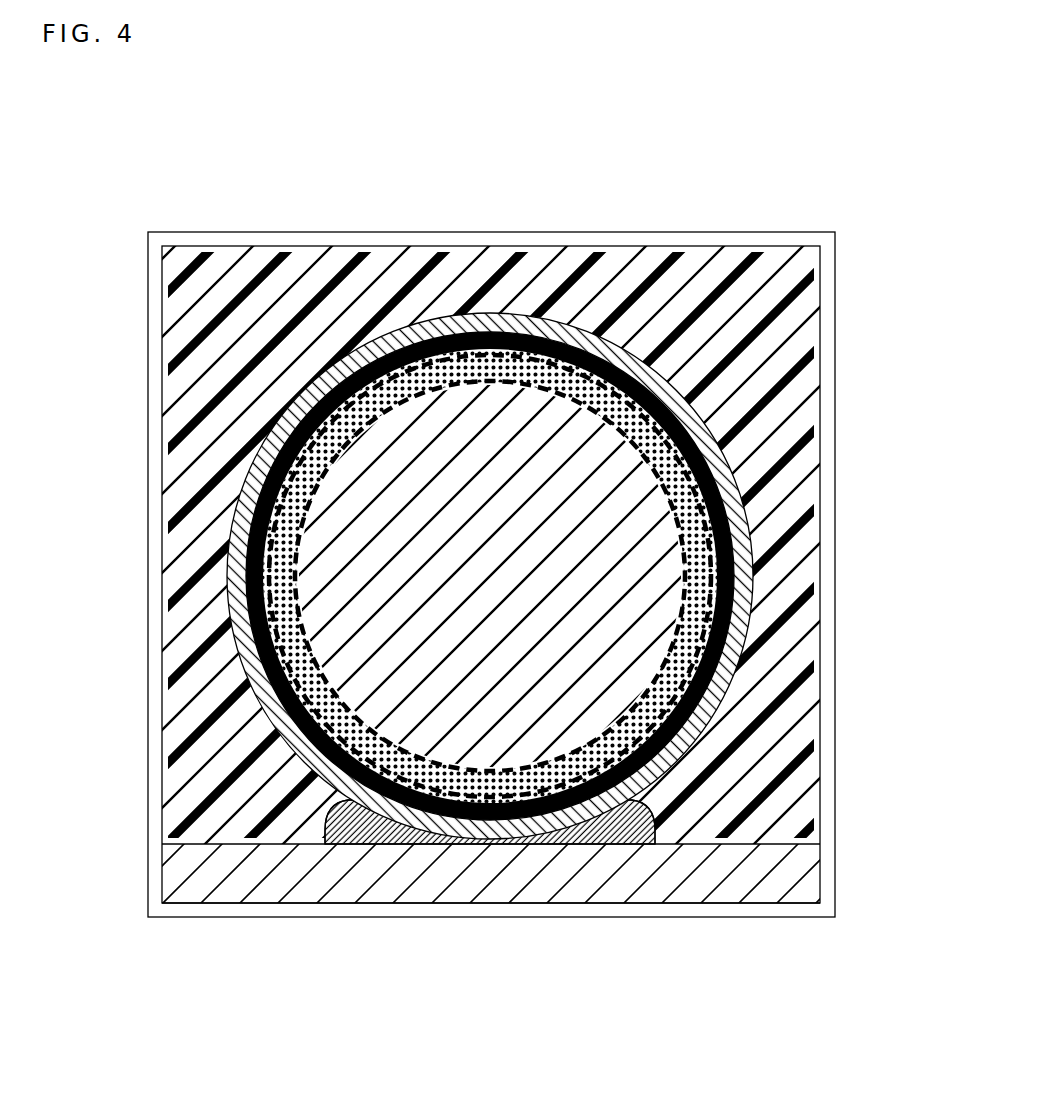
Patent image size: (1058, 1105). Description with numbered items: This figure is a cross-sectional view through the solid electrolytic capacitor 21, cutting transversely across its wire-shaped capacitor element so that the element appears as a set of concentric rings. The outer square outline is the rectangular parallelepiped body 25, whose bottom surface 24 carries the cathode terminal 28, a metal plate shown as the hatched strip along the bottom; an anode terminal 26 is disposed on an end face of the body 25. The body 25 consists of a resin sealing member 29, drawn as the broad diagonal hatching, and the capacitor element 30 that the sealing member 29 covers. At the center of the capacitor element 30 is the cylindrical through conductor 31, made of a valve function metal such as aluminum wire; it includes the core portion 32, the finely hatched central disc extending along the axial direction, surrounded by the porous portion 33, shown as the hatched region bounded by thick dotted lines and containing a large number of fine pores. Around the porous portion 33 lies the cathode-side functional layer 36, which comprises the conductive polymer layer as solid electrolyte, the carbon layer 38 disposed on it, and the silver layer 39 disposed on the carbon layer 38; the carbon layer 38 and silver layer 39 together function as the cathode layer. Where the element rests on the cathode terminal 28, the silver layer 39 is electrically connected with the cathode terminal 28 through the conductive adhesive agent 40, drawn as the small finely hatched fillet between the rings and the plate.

The solid electrolytic capacitor 21 is at (425, 183).
The bottom surface 24 is at (580, 903).
The body 25 is at (660, 240).
The anode terminal 26 is at (148, 417).
The cathode terminal 28 is at (425, 893).
The sealing member 29 is at (175, 346).
The capacitor element 30 is at (571, 576).
The through conductor 31 is at (529, 550).
The core portion 32 is at (657, 508).
The porous portion 33 is at (702, 568).
The cathode-side functional layer 36 is at (758, 591).
The carbon layer 38 is at (707, 683).
The silver layer 39 is at (703, 718).
The conductive adhesive agent 40 is at (342, 846).